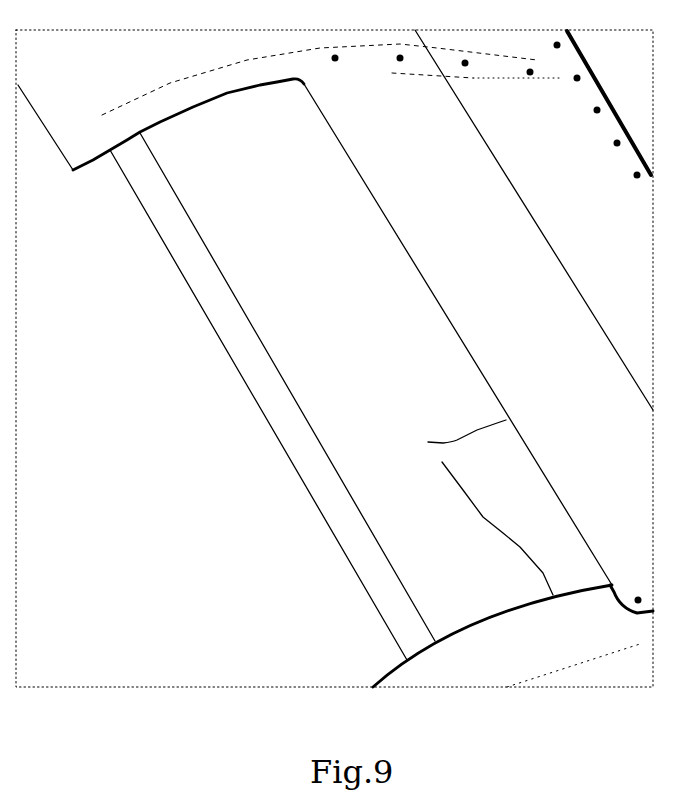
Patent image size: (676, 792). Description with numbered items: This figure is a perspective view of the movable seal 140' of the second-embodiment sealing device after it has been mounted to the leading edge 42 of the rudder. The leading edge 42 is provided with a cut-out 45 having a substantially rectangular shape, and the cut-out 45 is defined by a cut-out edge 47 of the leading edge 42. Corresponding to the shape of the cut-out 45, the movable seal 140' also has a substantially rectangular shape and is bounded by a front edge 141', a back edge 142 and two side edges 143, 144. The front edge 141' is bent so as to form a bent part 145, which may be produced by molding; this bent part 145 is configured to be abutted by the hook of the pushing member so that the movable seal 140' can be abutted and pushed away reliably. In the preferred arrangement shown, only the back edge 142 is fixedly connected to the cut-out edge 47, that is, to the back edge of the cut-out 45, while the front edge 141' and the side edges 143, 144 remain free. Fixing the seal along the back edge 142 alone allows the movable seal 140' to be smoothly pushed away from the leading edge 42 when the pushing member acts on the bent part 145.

The movable seal 140' is at (361, 372).
The front edge 141' is at (253, 405).
The back edge 142 is at (418, 266).
The side edge 143 is at (188, 107).
The side edge 144 is at (492, 636).
The bent part 145 is at (259, 387).
The cut-out 45 is at (67, 203).
The cut-out edge 47 is at (466, 507).
The leading edge 42 is at (553, 338).